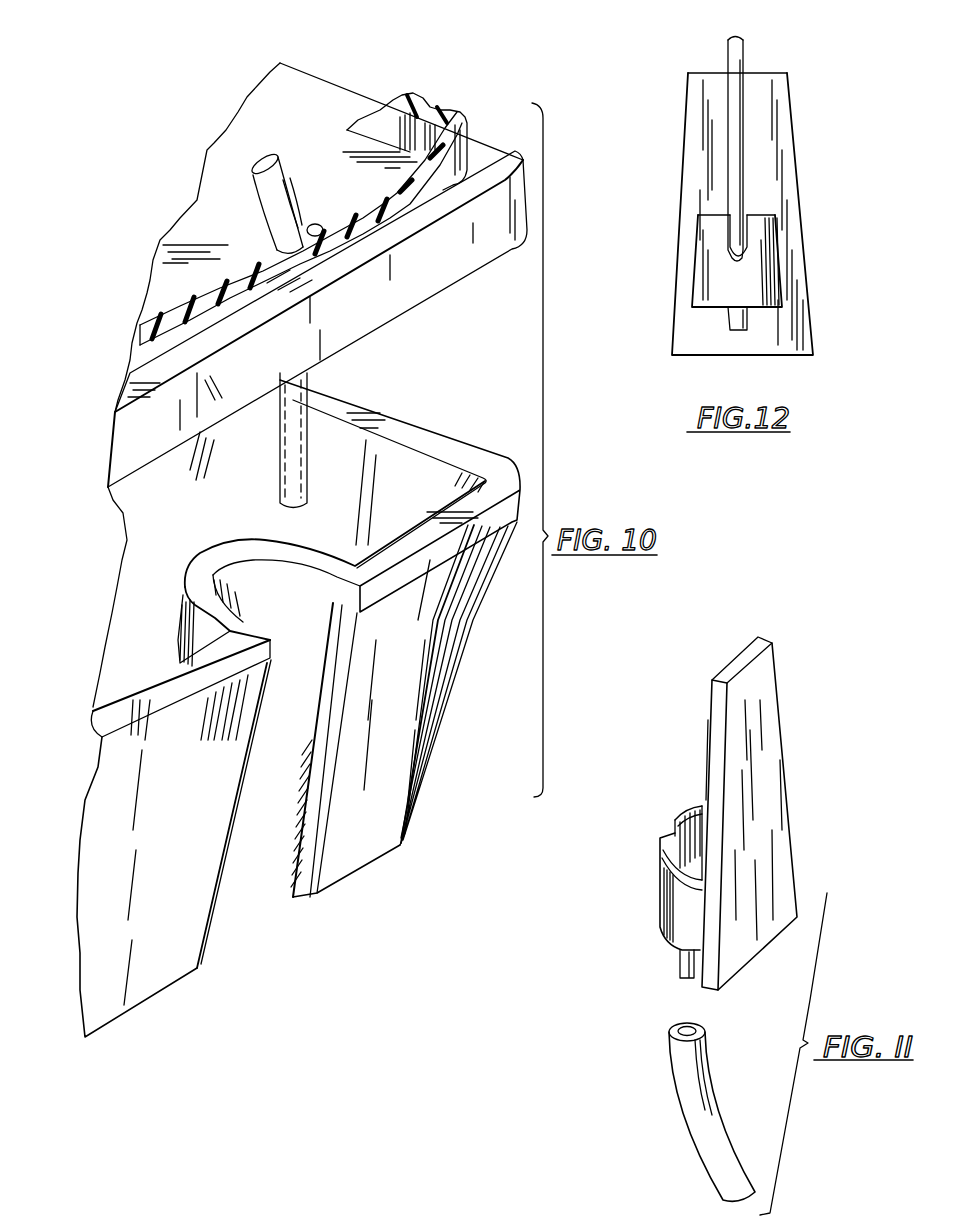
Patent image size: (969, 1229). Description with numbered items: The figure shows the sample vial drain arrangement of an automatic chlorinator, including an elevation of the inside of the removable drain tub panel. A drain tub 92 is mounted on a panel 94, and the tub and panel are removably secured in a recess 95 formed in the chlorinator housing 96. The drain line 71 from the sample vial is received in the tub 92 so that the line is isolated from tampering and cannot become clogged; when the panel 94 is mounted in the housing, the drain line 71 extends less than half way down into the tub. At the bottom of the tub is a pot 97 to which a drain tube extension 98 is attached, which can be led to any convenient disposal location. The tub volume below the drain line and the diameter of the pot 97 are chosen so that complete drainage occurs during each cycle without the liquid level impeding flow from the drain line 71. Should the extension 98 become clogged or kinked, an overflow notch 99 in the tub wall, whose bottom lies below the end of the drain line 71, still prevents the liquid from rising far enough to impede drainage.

In FIG. 10, the drain line 71 is at (283, 465).
In FIG. 12, the drain line 71 is at (747, 163).
In FIG. 12, the drain tub 92 is at (773, 275).
In FIG. 11, the drain tub 92 is at (673, 903).
In FIG. 12, the panel 94 is at (687, 203).
In FIG. 11, the panel 94 is at (772, 712).
In FIG. 10, the recess 95 is at (190, 587).
In FIG. 10, the chlorinator housing 96 is at (405, 737).
In FIG. 12, the pot 97 is at (732, 325).
In FIG. 11, the pot 97 is at (678, 957).
In FIG. 11, the drain tube extension 98 is at (682, 1075).
In FIG. 12, the overflow notch 99 is at (732, 268).
In FIG. 11, the overflow notch 99 is at (673, 830).